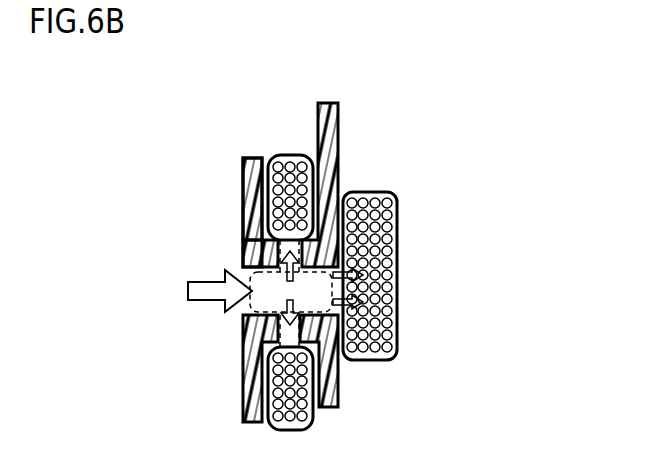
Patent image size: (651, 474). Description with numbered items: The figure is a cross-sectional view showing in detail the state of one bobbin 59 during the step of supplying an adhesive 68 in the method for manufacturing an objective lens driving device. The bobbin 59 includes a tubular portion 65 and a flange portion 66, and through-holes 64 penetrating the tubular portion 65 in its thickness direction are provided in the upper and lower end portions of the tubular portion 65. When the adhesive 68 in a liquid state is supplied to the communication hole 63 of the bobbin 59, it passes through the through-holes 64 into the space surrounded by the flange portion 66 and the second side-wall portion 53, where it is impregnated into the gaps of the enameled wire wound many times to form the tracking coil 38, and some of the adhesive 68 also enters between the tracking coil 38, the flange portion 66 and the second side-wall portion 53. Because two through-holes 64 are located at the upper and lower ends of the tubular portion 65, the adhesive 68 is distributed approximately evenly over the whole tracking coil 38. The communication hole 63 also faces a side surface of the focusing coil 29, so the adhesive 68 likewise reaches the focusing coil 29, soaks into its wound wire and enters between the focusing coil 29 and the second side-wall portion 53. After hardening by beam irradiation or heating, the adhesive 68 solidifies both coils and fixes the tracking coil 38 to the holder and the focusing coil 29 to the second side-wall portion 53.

The focusing coil 29 is at (377, 192).
The tracking coil 38 is at (288, 155).
The second side-wall portion 53 is at (328, 107).
The bobbin 59 is at (185, 181).
The communication hole 63 is at (248, 302).
The through-holes 64 is at (267, 260).
The tubular portion 65 is at (270, 250).
The flange portion 66 is at (243, 195).
The adhesive 68 is at (198, 289).